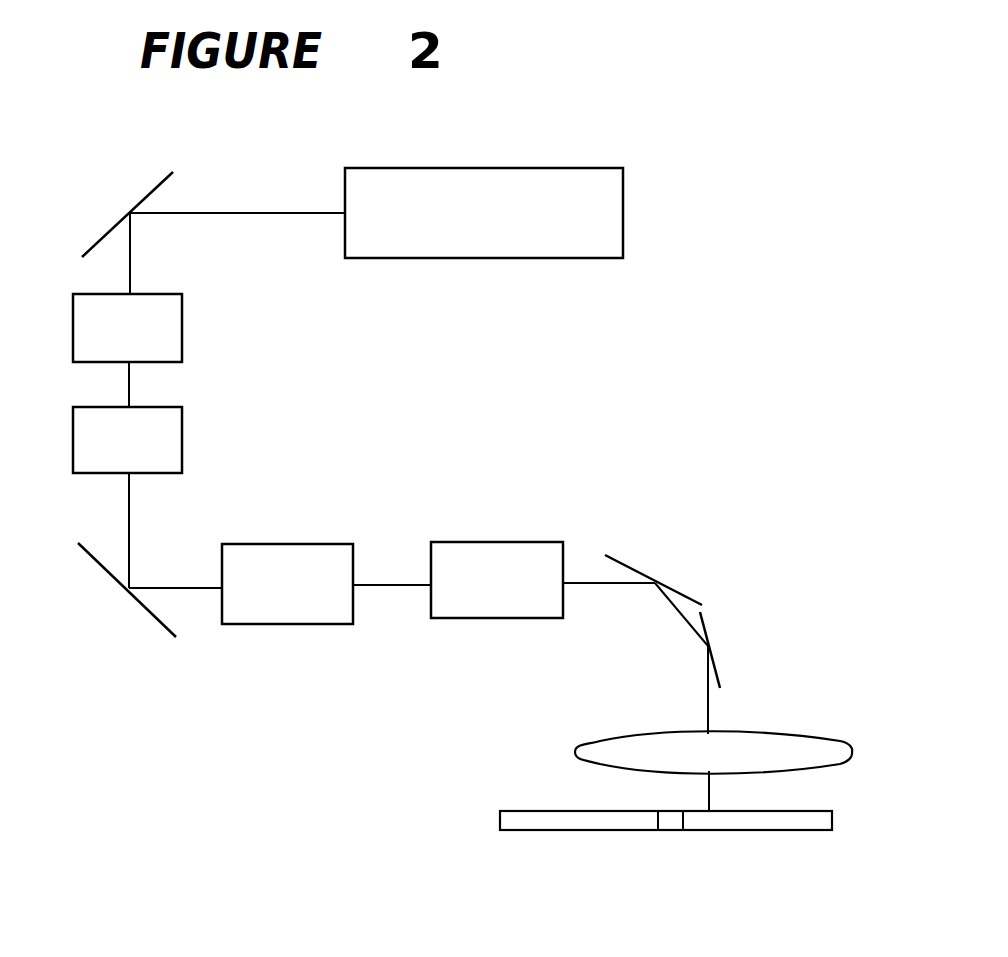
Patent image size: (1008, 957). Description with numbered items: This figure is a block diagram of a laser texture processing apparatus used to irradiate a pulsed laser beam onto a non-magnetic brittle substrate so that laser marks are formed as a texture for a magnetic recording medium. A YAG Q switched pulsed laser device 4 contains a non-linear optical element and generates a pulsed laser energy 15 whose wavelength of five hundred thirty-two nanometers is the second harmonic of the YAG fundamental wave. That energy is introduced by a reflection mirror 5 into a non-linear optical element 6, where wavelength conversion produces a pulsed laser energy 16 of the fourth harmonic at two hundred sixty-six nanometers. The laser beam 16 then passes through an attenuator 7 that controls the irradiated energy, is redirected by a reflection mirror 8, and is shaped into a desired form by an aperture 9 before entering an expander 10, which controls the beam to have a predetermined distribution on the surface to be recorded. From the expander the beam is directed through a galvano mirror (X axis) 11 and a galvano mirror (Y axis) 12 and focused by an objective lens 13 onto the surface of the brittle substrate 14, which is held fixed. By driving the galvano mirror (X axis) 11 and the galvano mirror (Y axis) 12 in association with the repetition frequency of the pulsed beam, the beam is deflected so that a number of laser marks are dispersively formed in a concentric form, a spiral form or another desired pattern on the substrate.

The YAG Q switched pulsed laser device 4 is at (484, 168).
The reflection mirror 5 is at (157, 183).
The non-linear optical element 6 is at (182, 313).
The attenuator 7 is at (182, 433).
The reflection mirror 8 is at (87, 552).
The aperture 9 is at (288, 544).
The expander 10 is at (494, 542).
The galvano mirror (X axis) 11 is at (628, 563).
The galvano mirror (Y axis) 12 is at (718, 676).
The objective lens 13 is at (784, 734).
The brittle substrate 14 is at (833, 818).
The pulsed laser energy 15 is at (130, 247).
The pulsed laser energy 16 is at (129, 380).